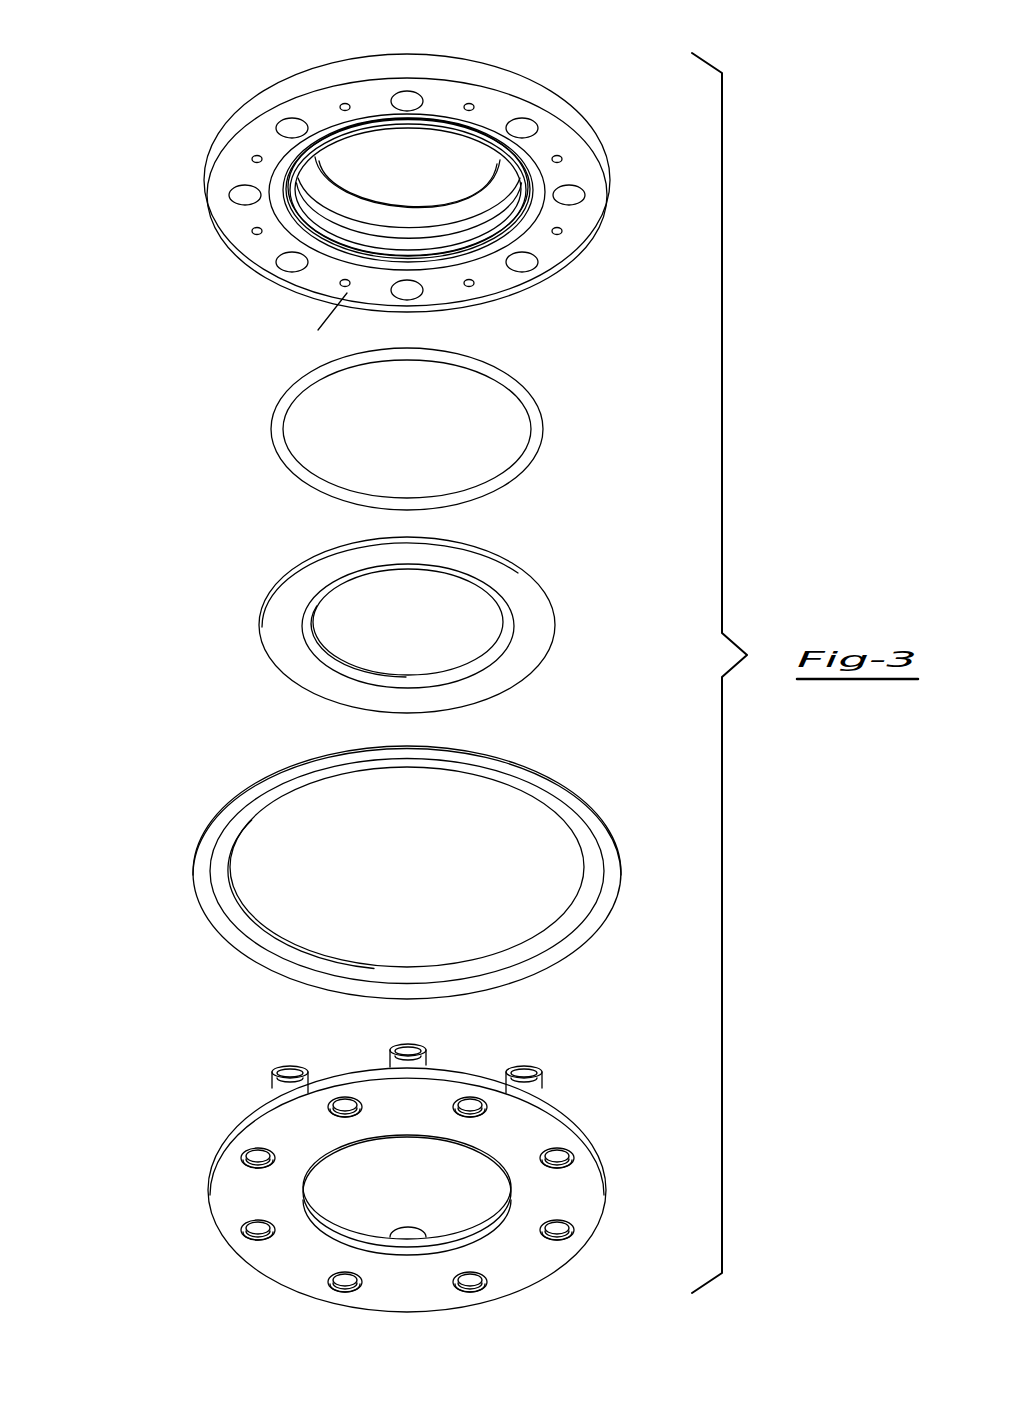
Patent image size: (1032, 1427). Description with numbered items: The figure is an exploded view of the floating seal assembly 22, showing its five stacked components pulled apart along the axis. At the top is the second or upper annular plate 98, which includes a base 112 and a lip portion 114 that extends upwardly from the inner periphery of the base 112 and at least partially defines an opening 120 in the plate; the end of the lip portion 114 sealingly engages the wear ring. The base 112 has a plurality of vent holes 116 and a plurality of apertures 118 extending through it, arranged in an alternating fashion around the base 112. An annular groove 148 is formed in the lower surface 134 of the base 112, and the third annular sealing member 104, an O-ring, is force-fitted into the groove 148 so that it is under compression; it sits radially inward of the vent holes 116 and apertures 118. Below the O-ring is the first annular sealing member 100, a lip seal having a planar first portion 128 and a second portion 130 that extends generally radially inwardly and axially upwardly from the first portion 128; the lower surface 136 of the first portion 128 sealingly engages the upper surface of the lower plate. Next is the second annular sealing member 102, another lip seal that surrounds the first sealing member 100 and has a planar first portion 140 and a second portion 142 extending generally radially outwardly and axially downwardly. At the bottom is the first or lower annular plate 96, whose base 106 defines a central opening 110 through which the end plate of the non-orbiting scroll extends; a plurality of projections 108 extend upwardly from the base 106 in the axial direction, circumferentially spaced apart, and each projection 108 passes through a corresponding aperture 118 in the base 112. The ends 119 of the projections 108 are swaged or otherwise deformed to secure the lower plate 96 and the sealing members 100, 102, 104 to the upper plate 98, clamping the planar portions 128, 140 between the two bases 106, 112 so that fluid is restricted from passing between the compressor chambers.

The seal assembly 22 is at (106, 115).
The first annular plate 96 is at (197, 1240).
The second annular plate 98 is at (212, 261).
The first annular sealing member 100 is at (246, 553).
The second annular sealing member 102 is at (195, 777).
The third annular sealing member 104 is at (535, 421).
The base 106 is at (275, 1127).
The projections 108 is at (375, 1158).
The central opening 110 is at (460, 1163).
The base 112 is at (313, 285).
The lip portion 114 is at (452, 203).
The vent holes 116 is at (562, 232).
The apertures 118 is at (585, 196).
The ends 119 is at (293, 1078).
The opening 120 is at (372, 147).
The first portion 128 is at (535, 612).
The second portion 130 is at (503, 640).
The lower surface 134 is at (318, 330).
The lower surface 136 is at (523, 652).
The first portion 140 is at (560, 803).
The second portion 142 is at (615, 853).
The annular groove 148 is at (535, 167).